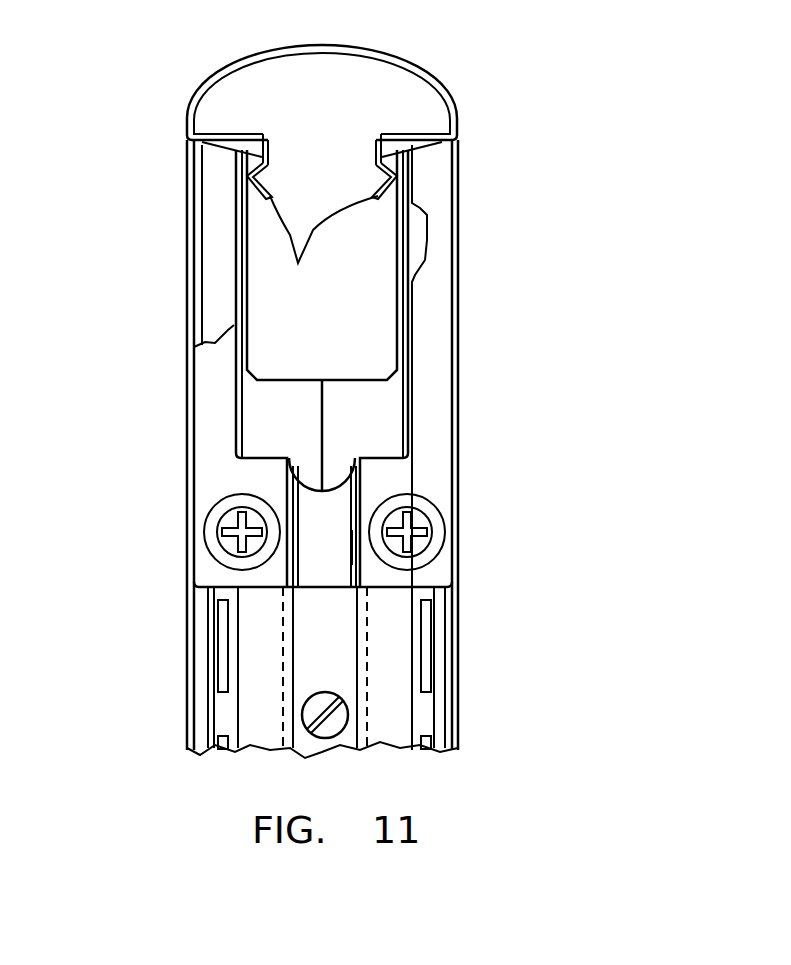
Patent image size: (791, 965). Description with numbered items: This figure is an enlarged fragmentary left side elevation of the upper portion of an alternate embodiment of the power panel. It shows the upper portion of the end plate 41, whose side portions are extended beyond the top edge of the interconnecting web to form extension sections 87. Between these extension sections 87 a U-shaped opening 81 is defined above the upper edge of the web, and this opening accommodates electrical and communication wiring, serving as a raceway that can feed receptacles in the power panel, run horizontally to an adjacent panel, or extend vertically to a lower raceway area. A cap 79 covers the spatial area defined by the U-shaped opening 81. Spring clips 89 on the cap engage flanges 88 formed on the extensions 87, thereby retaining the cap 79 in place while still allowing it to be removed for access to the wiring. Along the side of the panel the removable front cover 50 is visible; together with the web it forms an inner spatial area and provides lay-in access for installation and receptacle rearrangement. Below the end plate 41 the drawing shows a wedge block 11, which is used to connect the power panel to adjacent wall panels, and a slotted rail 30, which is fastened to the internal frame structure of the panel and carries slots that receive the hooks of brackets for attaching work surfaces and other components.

The cap 79 is at (378, 55).
The flanges 88 is at (252, 160).
The extension sections 87 is at (222, 305).
The spring clips 89 is at (322, 368).
The U-shaped opening 81 is at (360, 272).
The front cover 50 is at (457, 268).
The end plate 41 is at (358, 428).
The wedge blocks 11 is at (428, 408).
The slotted rails 30 is at (398, 655).